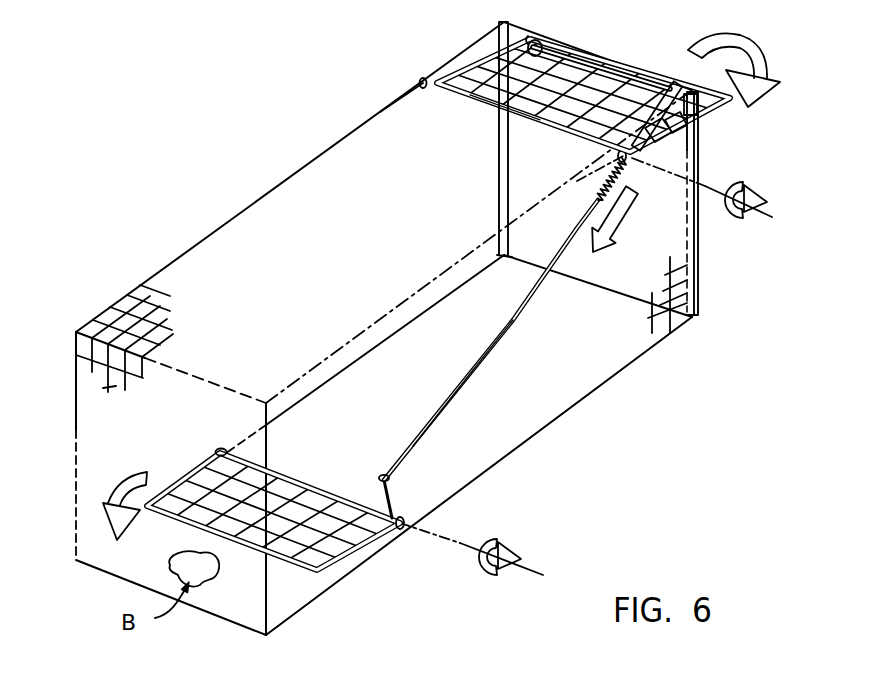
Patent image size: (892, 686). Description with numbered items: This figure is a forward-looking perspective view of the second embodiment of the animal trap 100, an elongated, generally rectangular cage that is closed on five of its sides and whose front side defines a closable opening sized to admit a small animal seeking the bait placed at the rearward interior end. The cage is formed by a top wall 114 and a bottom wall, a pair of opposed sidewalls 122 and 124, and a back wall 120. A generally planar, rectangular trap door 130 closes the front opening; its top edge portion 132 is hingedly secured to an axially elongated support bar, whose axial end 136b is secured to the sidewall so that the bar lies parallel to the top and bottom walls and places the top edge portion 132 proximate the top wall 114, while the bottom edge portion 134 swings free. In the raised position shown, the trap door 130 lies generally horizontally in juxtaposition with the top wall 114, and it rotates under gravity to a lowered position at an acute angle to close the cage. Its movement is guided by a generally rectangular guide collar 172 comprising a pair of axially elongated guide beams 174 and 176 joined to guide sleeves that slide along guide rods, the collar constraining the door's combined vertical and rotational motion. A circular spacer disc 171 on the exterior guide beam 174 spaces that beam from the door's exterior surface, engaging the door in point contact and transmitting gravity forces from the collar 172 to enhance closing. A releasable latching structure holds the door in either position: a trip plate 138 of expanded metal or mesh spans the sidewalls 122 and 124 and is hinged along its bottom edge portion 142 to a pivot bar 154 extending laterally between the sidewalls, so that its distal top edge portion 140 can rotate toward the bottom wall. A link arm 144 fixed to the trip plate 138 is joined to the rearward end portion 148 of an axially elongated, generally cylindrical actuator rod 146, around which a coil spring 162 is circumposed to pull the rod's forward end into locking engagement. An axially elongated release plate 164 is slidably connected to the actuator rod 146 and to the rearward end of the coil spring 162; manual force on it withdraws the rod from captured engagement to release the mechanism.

The animal trap 100 is at (162, 164).
The top wall 114 is at (143, 316).
The back wall 120 is at (103, 368).
The sidewall 122 is at (663, 327).
The sidewall 124 is at (285, 203).
The trap door 130 is at (710, 100).
The top edge portion 132 is at (440, 104).
The bottom edge portion 134 is at (706, 122).
The axial end of support bar 136b is at (412, 83).
The trip plate 138 is at (331, 568).
The top edge portion 140 is at (295, 566).
The bottom edge portion 142 is at (403, 532).
The link arm 144 is at (393, 495).
The actuator rod 146 is at (473, 370).
The rearward end portion 148 is at (413, 446).
The pivot bar 154 is at (412, 525).
The coil spring 162 is at (601, 178).
The release plate 164 is at (577, 177).
The spacer disc 171 is at (557, 47).
The guide collar 172 is at (521, 36).
The guide beam 174 is at (617, 53).
The guide beam 176 is at (513, 118).